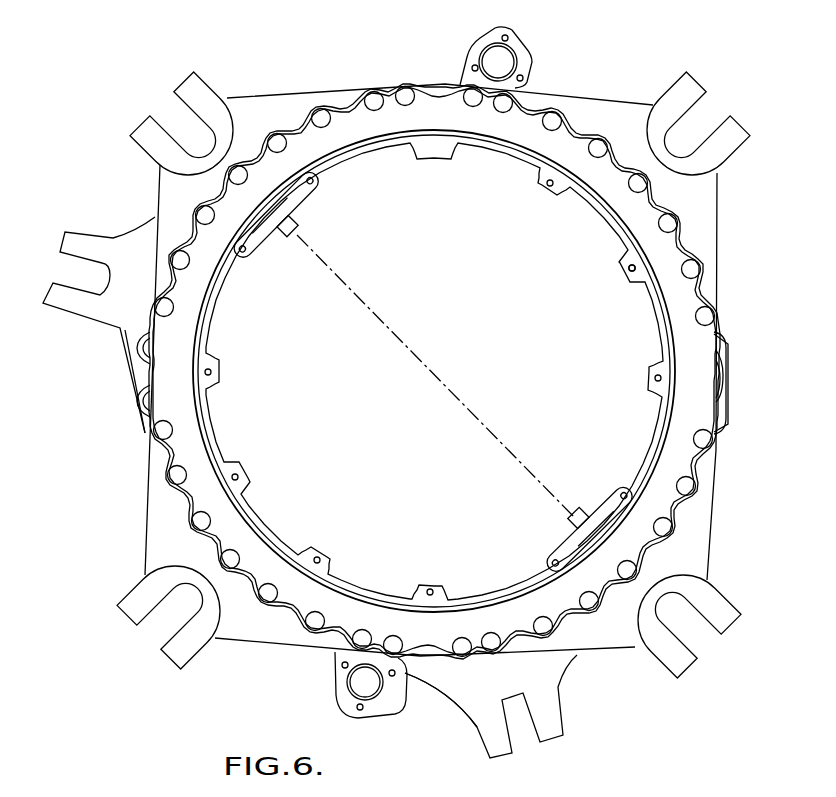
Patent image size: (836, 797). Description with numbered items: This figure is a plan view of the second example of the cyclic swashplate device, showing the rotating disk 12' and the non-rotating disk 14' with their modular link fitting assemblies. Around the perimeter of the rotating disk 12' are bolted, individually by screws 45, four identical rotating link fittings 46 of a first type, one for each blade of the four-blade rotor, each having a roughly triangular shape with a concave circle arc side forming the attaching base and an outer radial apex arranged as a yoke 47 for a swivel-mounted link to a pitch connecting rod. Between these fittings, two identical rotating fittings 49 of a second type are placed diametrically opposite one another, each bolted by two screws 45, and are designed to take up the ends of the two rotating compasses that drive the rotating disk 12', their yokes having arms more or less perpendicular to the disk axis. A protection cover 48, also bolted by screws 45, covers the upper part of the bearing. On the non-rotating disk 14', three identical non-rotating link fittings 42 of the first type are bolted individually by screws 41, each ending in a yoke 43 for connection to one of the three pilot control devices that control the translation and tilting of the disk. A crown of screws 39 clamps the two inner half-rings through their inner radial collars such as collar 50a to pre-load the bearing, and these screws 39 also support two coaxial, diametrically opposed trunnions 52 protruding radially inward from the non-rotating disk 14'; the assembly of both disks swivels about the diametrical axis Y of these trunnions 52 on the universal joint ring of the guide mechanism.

The rotating disk 12' is at (764, 383).
The non-rotating disk 14' is at (434, 371).
The screws 39 is at (547, 185).
The screws 41 is at (140, 353).
The non-rotating link fittings 42 is at (125, 331).
The yoke 43 is at (82, 243).
The screws 45 is at (456, 86).
The rotating link fittings 46 is at (257, 118).
The yoke 47 is at (203, 85).
The protection cover 48 is at (694, 392).
The rotating fittings 49 is at (520, 57).
The inner radial collar 50a is at (628, 266).
The trunnions 52 is at (298, 205).
The diametrical axis Y— Y is at (506, 443).